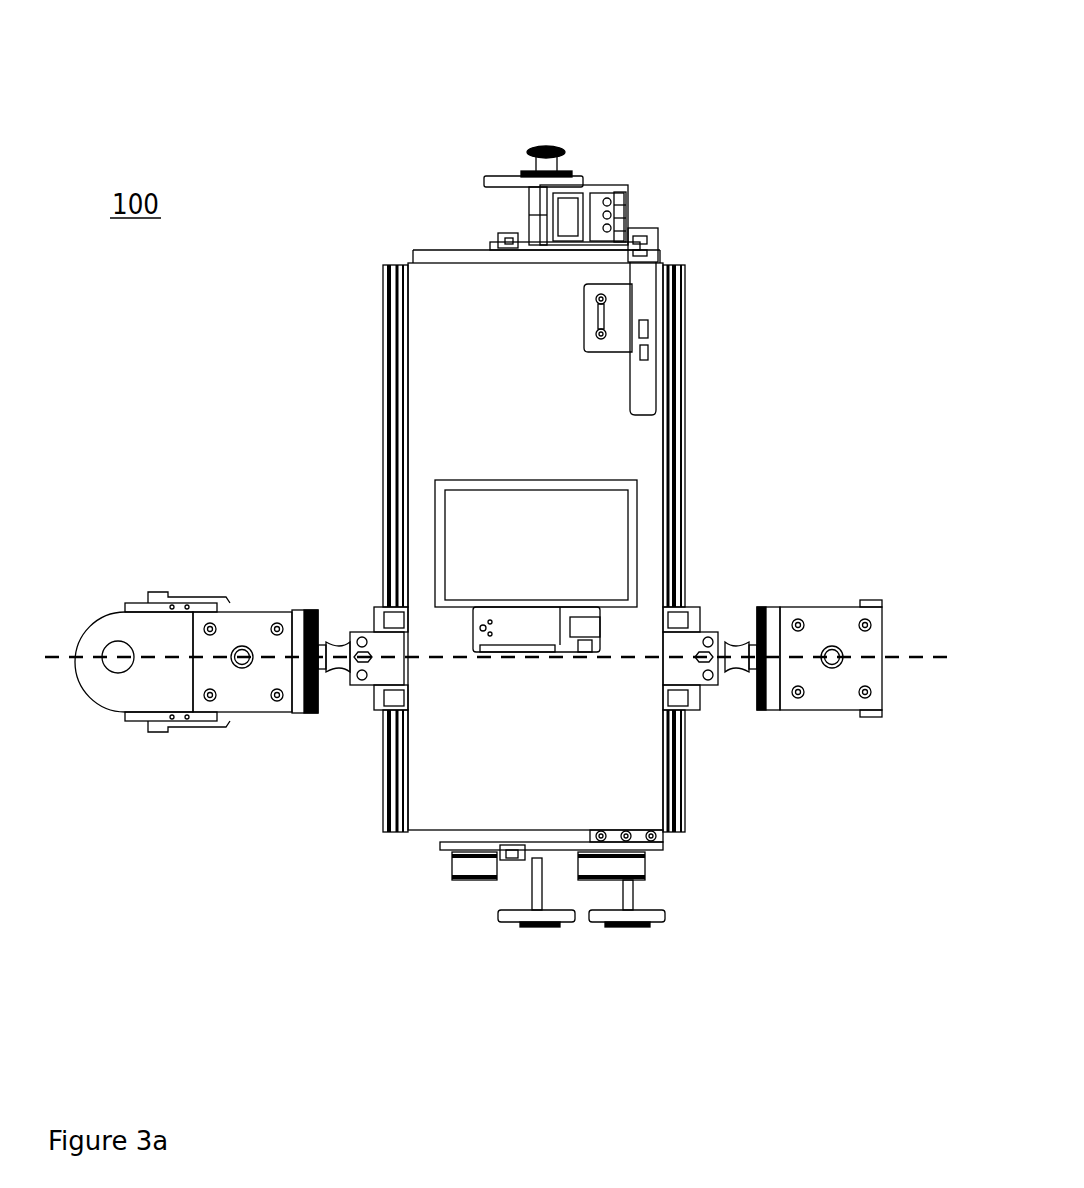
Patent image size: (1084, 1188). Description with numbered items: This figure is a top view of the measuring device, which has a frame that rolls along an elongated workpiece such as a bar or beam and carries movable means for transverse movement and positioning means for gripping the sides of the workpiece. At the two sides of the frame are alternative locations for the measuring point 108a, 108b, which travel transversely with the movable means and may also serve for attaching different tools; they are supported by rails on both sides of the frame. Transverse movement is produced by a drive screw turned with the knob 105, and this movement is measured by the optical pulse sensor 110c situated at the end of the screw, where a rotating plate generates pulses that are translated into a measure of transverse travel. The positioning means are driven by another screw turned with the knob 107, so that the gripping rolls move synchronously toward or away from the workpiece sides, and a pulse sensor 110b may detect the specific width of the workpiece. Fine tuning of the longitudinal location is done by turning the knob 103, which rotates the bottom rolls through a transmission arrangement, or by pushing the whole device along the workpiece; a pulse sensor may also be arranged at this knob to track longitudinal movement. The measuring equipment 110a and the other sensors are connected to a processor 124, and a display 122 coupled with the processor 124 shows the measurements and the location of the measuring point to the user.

The knob 103 is at (663, 922).
The knob 105 is at (562, 918).
The turning knob 107 is at (540, 157).
The measuring point 108a is at (238, 648).
The measuring point 108b is at (835, 650).
The measuring equipment 110a is at (605, 186).
The pulse sensor 110b is at (500, 238).
The optical sensor 110c is at (512, 856).
The display 122 is at (608, 530).
The processor 124 is at (485, 630).